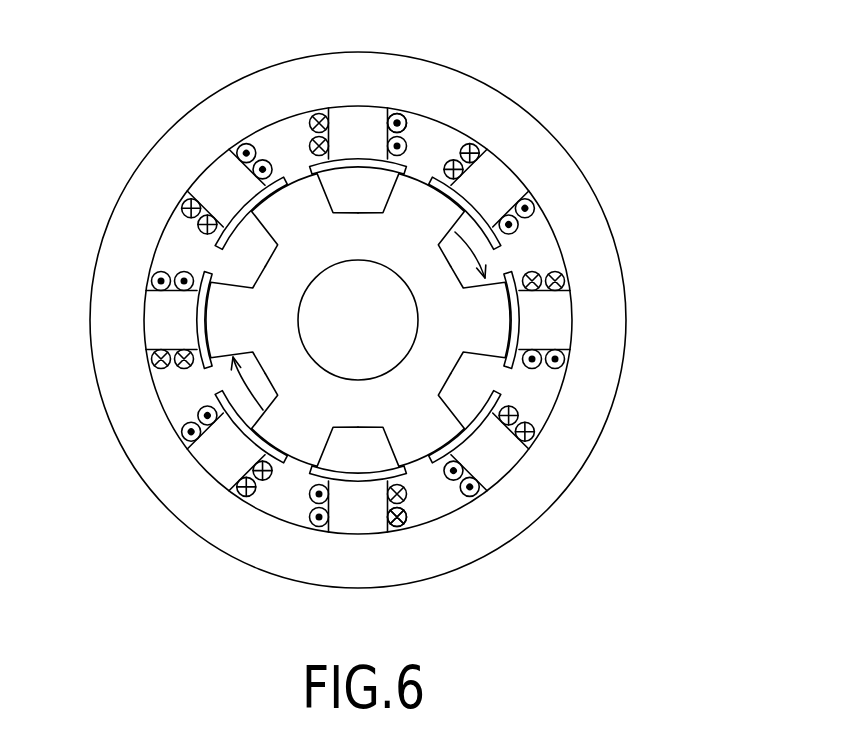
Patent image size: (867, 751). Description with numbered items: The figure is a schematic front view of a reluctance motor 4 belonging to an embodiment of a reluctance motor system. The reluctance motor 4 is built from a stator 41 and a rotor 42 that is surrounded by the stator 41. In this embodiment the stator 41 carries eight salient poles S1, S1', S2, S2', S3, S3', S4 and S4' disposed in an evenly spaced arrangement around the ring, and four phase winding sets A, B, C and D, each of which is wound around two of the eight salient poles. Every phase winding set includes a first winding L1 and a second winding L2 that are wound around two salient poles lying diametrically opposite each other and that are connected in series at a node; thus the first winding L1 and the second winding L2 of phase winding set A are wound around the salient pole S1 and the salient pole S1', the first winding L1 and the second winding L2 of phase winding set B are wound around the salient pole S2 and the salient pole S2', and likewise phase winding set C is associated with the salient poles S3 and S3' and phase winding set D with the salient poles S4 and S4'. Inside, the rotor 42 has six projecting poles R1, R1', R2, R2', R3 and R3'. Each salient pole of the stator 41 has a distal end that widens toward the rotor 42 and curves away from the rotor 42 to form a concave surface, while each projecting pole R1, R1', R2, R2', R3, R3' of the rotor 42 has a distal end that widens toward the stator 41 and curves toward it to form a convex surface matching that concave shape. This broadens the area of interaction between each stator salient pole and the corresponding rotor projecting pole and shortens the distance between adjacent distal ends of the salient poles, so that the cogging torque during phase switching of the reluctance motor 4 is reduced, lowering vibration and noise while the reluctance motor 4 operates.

The reluctance motor 4 is at (592, 138).
The stator 41 is at (587, 238).
The rotor 42 is at (432, 353).
The first winding L1 is at (407, 124).
The second winding L2 is at (409, 516).
The phase winding set A is at (483, 142).
The phase winding set B is at (573, 278).
The phase winding set C is at (236, 141).
The phase winding set D is at (320, 106).
The salient pole S1 is at (484, 193).
The salient pole S2 is at (537, 320).
The salient pole S3 is at (484, 446).
The salient pole S4 is at (358, 499).
The salient pole S1' is at (231, 446).
The salient pole S2' is at (179, 320).
The salient pole S3' is at (231, 193).
The salient pole S4' is at (358, 141).
The projecting pole R1 is at (419, 214).
The projecting pole R2 is at (480, 319).
The projecting pole R3 is at (419, 425).
The projecting pole R1' is at (297, 425).
The projecting pole R2' is at (235, 319).
The projecting pole R3' is at (297, 214).